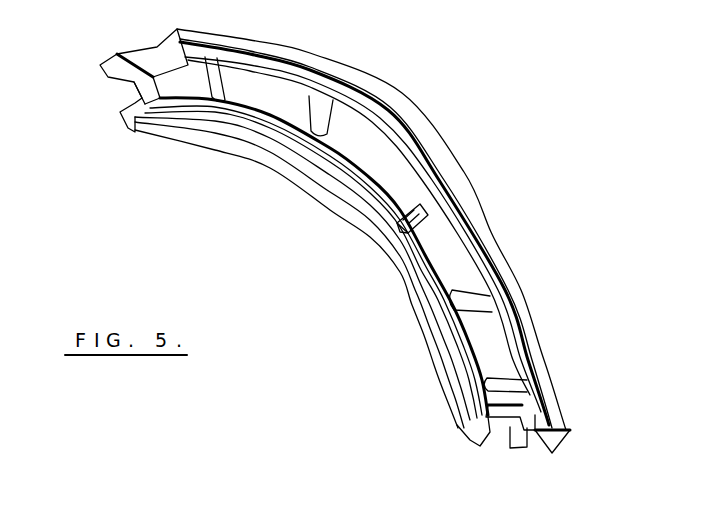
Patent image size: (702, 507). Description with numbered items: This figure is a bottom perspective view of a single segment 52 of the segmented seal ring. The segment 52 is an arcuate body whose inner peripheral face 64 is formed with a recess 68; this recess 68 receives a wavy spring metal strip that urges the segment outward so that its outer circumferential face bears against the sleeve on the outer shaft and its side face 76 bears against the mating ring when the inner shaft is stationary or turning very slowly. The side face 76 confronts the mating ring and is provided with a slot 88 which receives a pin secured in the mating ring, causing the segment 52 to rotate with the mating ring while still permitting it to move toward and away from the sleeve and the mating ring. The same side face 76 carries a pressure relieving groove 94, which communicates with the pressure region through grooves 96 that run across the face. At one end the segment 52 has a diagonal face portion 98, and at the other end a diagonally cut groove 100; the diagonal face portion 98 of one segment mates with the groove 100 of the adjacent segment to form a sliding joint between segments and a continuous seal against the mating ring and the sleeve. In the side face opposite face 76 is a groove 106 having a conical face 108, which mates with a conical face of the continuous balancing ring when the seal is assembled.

The segment 52 is at (368, 290).
The inner peripheral face 64 is at (428, 323).
The recess 68 is at (484, 444).
The side face 76 is at (392, 165).
The slot 88 is at (405, 228).
The pressure relieving groove 94 is at (455, 212).
The grooves 96 is at (314, 132).
The diagonal face portion 98 is at (545, 456).
The diagonally cut groove 100 is at (140, 57).
The groove 106 is at (513, 427).
The conical face 108 is at (115, 97).